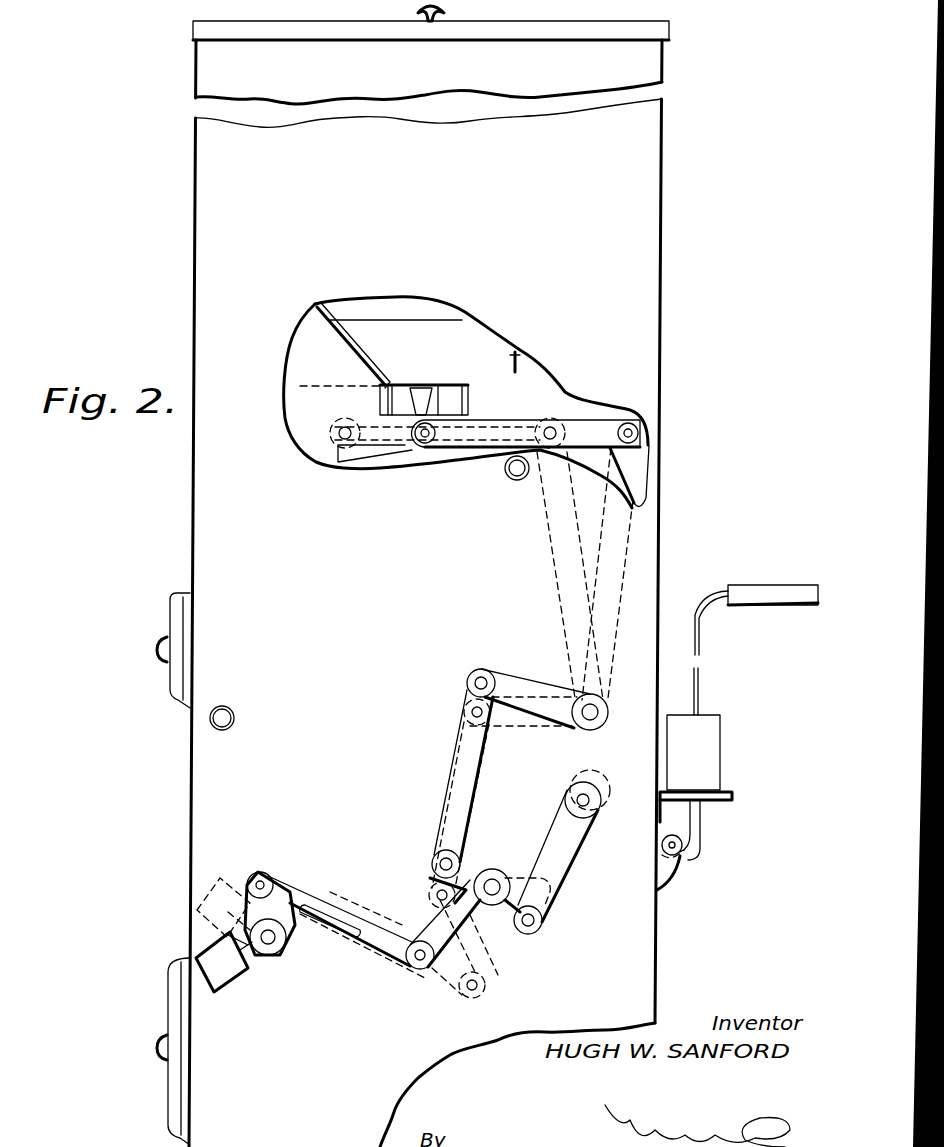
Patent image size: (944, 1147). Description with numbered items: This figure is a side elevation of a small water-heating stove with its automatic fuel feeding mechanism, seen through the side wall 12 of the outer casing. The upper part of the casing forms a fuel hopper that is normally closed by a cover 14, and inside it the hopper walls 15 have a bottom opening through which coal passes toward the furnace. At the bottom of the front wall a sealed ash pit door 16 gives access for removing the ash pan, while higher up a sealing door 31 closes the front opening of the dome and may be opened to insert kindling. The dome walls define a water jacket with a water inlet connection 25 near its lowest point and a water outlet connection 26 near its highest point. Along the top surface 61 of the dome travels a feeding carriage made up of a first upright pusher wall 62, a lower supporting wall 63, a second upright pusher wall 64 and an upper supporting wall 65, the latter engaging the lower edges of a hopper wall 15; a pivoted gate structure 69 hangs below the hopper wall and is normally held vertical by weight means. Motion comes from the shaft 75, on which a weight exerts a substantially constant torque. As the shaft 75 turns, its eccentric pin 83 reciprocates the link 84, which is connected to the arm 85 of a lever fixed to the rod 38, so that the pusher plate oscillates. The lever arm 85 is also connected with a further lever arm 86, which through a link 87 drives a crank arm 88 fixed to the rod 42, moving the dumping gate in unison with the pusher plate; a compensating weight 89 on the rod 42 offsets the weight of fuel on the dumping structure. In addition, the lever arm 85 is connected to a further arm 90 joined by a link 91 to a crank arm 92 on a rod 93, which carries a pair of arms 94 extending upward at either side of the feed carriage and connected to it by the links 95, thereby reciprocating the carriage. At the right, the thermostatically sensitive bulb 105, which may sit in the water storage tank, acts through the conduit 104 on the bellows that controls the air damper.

The side wall 12 is at (632, 176).
The cover 14 is at (655, 33).
The hopper wall 15 is at (333, 318).
The sealed ash pit door 16 is at (172, 1002).
The water inlet connection 25 is at (240, 696).
The water outlet connection 26 is at (510, 479).
The sealing door 31 is at (178, 617).
The rod 38 is at (496, 879).
The rod 42 is at (274, 941).
The top surface of the dome 61 is at (364, 445).
The first upright pusher wall 62 is at (580, 415).
The lower supporting wall 63 is at (515, 408).
The second upright pusher wall 64 is at (490, 377).
The upper supporting wall 65 is at (410, 393).
The pivoted gate structure 69 is at (503, 347).
The shaft 75 is at (592, 792).
The eccentric pin 83 is at (576, 816).
The link 84 is at (558, 856).
The arm of the lever 85 is at (520, 895).
The lever arm 86 is at (485, 935).
The link 87 is at (371, 928).
The crank arm 88 is at (258, 905).
The compensating weight 89 is at (227, 969).
The arm 90 is at (465, 838).
The link 91 is at (462, 752).
The crank arm 92 is at (508, 676).
The rod 93 is at (592, 712).
The arms 94 is at (625, 477).
The links 95 is at (457, 432).
The conduit 104 is at (699, 681).
The thermostatically sensitive bulb 105 is at (776, 578).